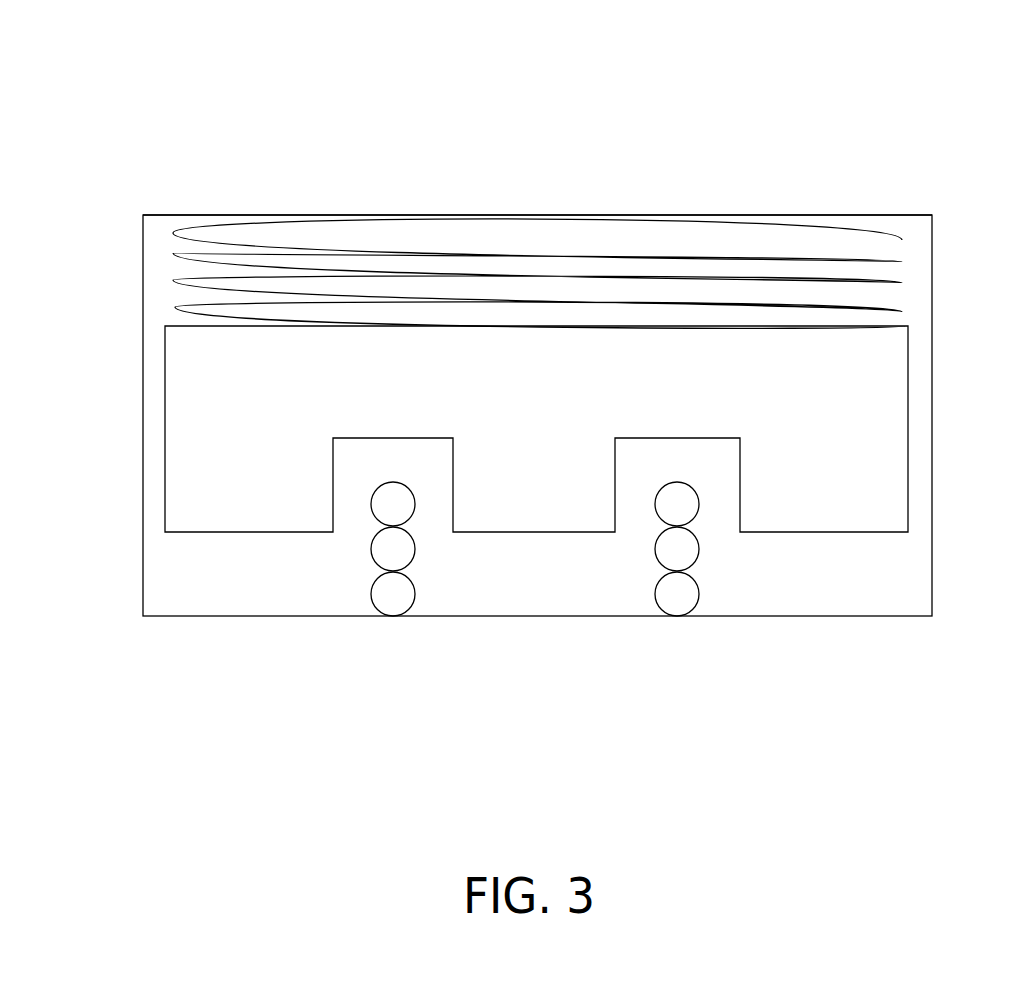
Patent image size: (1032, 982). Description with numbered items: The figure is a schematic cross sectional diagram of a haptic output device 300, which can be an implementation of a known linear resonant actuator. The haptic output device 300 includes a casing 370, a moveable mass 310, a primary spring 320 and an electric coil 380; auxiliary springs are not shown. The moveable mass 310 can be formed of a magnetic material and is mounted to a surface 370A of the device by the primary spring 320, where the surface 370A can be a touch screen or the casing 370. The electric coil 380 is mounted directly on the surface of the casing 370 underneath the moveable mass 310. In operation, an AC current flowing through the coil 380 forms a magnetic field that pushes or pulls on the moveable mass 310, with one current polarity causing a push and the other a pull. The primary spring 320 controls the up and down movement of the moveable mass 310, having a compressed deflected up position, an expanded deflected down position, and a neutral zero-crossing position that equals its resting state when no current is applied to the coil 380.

The haptic output device 300 is at (872, 65).
The moveable mass 310 is at (190, 400).
The primary spring 320 is at (195, 257).
The casing 370 is at (142, 547).
The surface 370A is at (448, 205).
The electric coil 380 is at (388, 603).